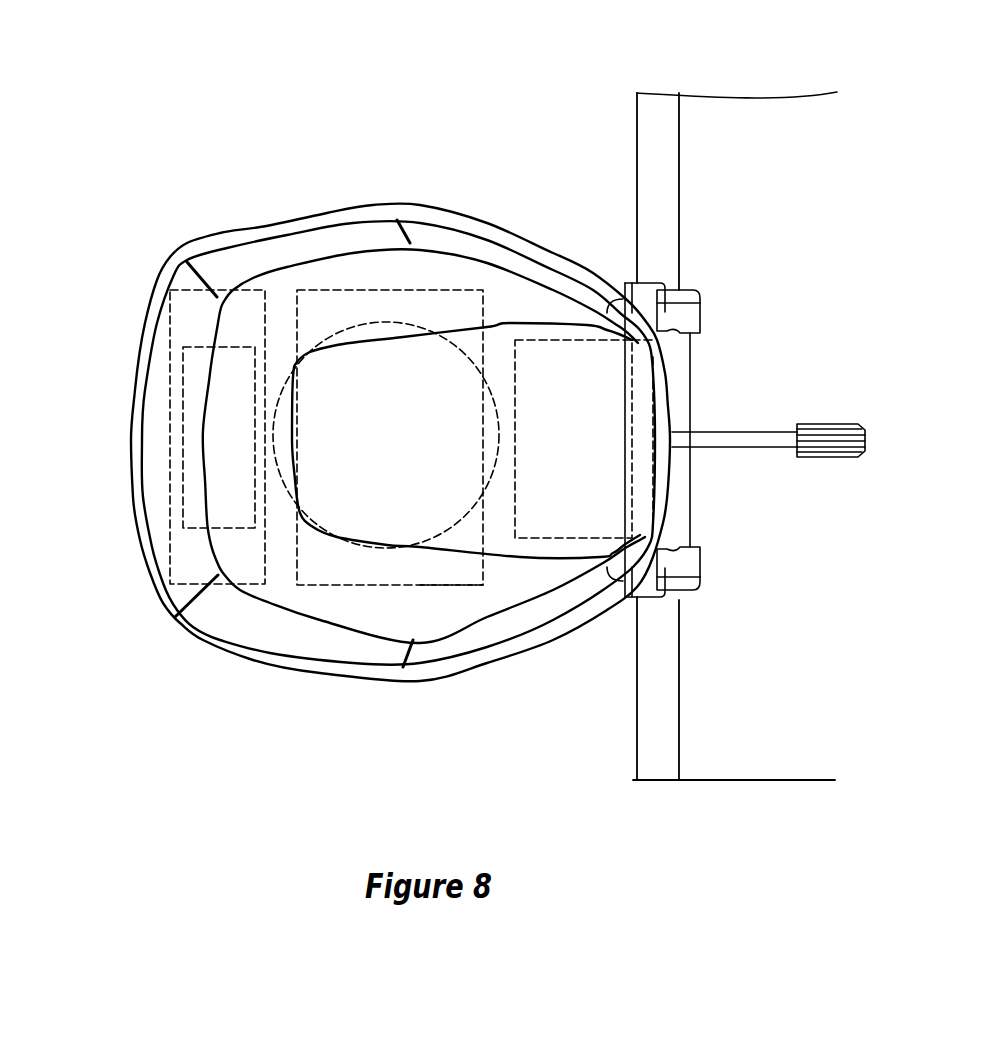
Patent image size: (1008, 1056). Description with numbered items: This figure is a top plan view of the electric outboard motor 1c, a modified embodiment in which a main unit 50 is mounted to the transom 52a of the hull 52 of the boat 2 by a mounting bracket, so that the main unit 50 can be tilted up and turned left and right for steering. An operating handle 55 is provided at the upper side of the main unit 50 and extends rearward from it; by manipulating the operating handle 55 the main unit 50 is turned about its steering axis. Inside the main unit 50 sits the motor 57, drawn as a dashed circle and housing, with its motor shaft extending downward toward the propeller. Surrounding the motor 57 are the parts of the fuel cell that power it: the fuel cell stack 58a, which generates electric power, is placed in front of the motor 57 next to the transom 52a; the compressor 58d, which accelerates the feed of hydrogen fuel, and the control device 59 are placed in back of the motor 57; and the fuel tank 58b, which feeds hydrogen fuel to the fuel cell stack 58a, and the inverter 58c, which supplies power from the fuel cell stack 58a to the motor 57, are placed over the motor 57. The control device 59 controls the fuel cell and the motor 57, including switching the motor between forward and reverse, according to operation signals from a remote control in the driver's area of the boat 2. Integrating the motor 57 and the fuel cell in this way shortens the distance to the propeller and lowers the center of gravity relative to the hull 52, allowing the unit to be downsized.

The electric outboard motor 1c is at (632, 40).
The main unit 50 is at (257, 196).
The motor 57 is at (408, 328).
The compressor 58d is at (185, 318).
The inverter 58c is at (545, 350).
The fuel cell stack 58a is at (643, 390).
The fuel tank 58b is at (430, 573).
The control device 59 is at (227, 518).
The operating handle 55 is at (743, 447).
The boat 2 is at (766, 254).
The hull 52 is at (829, 790).
The transom 52a is at (667, 687).